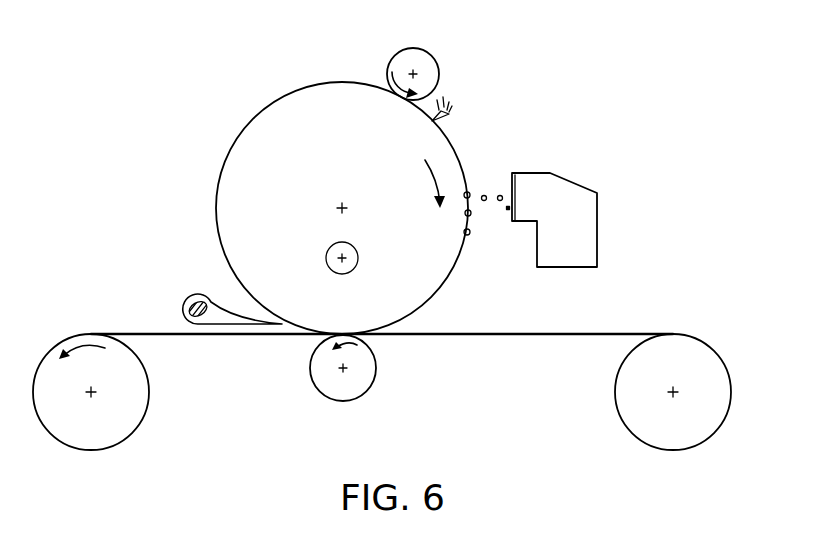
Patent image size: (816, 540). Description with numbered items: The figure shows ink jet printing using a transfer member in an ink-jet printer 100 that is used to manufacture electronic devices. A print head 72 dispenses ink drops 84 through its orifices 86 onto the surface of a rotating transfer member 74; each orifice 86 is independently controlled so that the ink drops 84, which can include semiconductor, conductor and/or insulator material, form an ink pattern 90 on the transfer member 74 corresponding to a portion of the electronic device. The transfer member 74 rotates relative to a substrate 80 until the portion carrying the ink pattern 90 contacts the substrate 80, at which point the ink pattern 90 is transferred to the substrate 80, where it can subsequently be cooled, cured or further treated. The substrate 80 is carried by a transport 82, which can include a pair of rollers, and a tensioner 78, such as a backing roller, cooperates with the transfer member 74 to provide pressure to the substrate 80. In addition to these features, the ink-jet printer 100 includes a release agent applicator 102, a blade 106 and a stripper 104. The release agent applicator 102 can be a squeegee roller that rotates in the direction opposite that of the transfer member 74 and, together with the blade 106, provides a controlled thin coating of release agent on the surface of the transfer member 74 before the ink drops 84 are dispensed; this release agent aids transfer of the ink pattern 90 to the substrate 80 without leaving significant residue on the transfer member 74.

The ink-jet printer 100 is at (594, 55).
The transfer member 74 is at (338, 81).
The release agent applicator 102 is at (432, 58).
The blade 106 is at (445, 108).
The ink drops 84 is at (482, 184).
The ink pattern 90 is at (464, 233).
The orifice 86 is at (507, 209).
The print head 72 is at (597, 230).
The stripper 104 is at (196, 293).
The substrate 80 is at (628, 333).
The transport 82 is at (133, 434).
The tensioner 78 is at (319, 392).